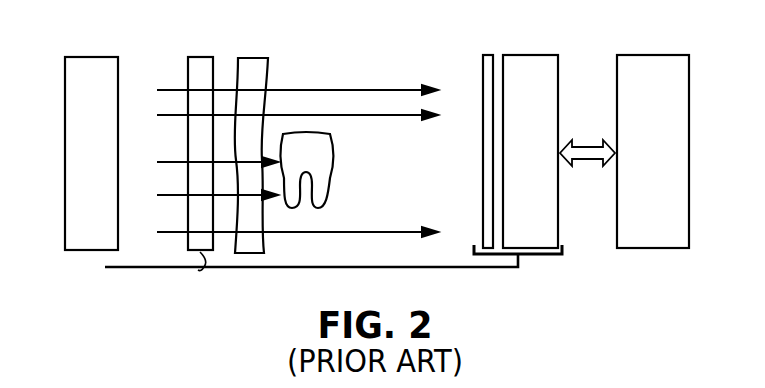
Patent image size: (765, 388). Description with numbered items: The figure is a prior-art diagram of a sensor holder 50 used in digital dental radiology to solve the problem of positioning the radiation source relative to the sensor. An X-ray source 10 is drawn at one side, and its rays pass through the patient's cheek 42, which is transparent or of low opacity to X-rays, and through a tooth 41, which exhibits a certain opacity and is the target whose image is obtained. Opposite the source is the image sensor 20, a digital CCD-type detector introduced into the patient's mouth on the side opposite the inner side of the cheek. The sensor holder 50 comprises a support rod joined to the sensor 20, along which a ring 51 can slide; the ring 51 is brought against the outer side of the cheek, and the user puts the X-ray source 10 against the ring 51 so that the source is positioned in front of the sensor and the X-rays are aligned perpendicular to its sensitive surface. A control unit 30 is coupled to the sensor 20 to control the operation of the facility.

The source 10 is at (90, 251).
The ring 51 is at (188, 68).
The cheek 42 is at (247, 254).
The tooth 41 is at (316, 197).
The image sensor 20 is at (474, 52).
The sensor holder 50 is at (466, 268).
The control unit 30 is at (652, 250).